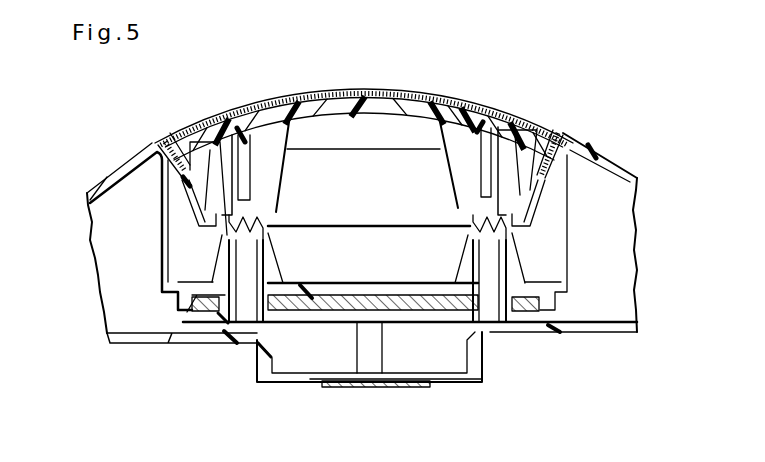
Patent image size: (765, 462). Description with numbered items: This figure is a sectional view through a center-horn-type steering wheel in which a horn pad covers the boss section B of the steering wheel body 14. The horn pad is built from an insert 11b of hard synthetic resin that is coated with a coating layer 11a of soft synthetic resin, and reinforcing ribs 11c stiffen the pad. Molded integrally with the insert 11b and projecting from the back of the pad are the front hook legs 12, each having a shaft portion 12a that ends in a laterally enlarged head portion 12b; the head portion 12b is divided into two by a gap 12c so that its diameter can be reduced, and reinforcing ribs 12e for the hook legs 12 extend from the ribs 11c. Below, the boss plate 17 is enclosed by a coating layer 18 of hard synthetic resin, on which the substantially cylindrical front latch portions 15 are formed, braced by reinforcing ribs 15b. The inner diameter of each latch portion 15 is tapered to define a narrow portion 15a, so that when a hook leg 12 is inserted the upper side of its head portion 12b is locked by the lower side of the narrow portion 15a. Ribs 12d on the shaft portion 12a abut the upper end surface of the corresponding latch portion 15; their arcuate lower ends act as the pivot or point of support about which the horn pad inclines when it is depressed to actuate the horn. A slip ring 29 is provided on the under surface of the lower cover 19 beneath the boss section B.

The coating layer 11a is at (430, 97).
The insert 11b is at (392, 107).
The reinforcing ribs 11c is at (322, 143).
The front hook leg 12 is at (286, 188).
The shaft portion 12a is at (225, 210).
The head portion 12b is at (246, 245).
The gap 12c is at (240, 336).
The ribs 12d is at (218, 188).
The reinforcing ribs 12e is at (242, 170).
The steering wheel body 14 is at (582, 310).
The front latch portion 15 is at (262, 262).
The narrow portion 15a is at (270, 218).
The reinforcing ribs 15b is at (208, 275).
The boss plate 17 is at (305, 305).
The coating layer 18 is at (523, 312).
The lower cover 19 is at (588, 333).
The slip ring 29 is at (423, 385).
The boss section B is at (383, 397).